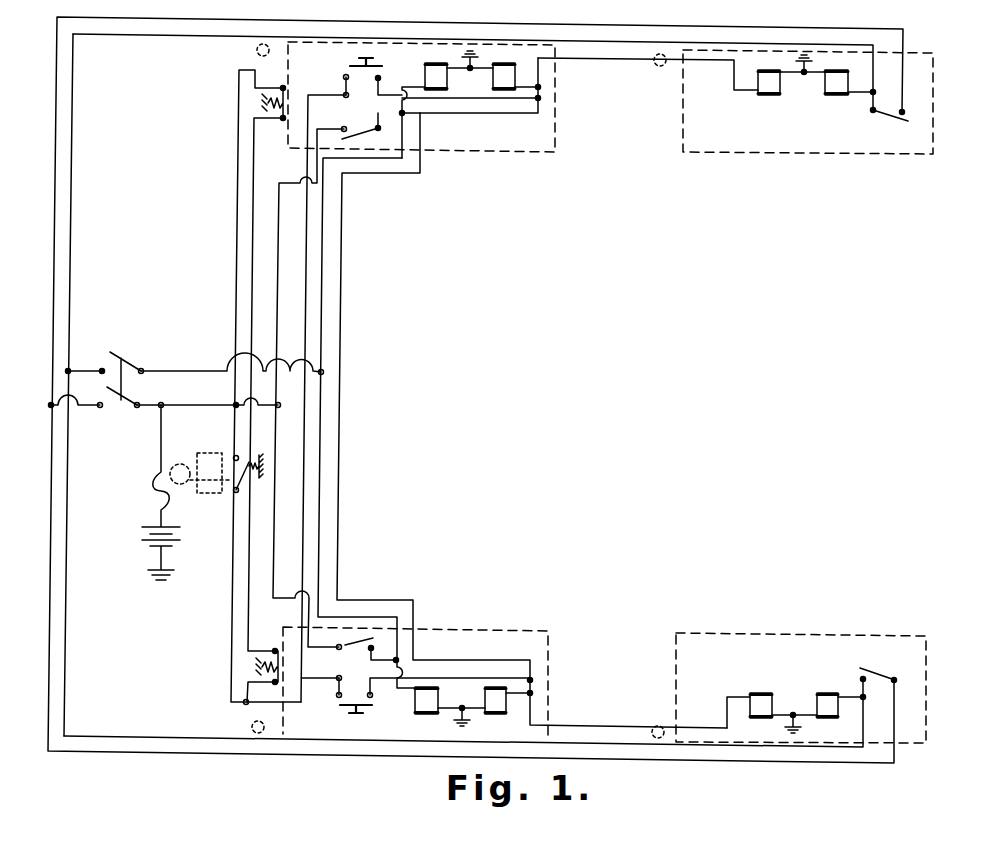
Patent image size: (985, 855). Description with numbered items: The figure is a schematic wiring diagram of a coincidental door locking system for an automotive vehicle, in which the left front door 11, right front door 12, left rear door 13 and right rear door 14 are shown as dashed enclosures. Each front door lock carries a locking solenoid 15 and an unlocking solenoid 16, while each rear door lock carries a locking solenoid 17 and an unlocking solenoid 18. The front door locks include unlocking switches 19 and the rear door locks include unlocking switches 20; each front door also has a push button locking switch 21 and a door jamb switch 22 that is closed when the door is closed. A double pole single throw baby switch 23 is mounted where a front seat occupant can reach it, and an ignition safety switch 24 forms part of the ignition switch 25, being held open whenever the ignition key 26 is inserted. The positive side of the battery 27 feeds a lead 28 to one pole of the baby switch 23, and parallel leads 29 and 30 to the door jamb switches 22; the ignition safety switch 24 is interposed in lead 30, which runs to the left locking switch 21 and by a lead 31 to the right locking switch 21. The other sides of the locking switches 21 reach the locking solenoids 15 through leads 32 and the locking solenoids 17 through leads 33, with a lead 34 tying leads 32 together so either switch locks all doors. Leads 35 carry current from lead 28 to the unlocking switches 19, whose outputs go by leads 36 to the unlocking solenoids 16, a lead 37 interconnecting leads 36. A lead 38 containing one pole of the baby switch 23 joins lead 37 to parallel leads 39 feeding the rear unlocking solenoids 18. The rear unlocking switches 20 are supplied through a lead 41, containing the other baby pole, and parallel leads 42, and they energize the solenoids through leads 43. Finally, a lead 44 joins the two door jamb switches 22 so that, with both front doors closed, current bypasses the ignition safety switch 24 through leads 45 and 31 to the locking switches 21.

The left front door 11 is at (285, 742).
The right front door 12 is at (346, 38).
The left rear door 13 is at (926, 728).
The right rear door 14 is at (918, 51).
The front door locking solenoid 15 is at (503, 63).
The front door unlocking solenoid 16 is at (430, 63).
The rear door locking solenoid 17 is at (762, 70).
The rear door unlocking solenoid 18 is at (842, 70).
The front door unlocking switch 19 is at (372, 130).
The rear door unlocking switch 20 is at (886, 121).
The locking switch 21 is at (372, 66).
The door jamb switch 22 is at (268, 95).
The baby switch 23 is at (137, 363).
The ignition safety switch 24 is at (238, 483).
The ignition switch 25 is at (205, 495).
The ignition key 26 is at (198, 453).
The battery 27 is at (171, 547).
The lead 28 is at (180, 407).
The lead 29 is at (238, 262).
The lead 30 is at (230, 580).
The lead 31 is at (303, 462).
The lead 32 is at (462, 113).
The lead 33 is at (601, 60).
The lead 34 is at (342, 258).
The lead 35 is at (279, 240).
The lead 36 is at (400, 113).
The lead 37 is at (322, 235).
The lead 38 is at (180, 370).
The lead 39 is at (74, 213).
The lead 41 is at (78, 407).
The lead 42 is at (54, 268).
The lead 43 is at (868, 106).
The lead 44 is at (251, 312).
The lead 45 is at (302, 698).